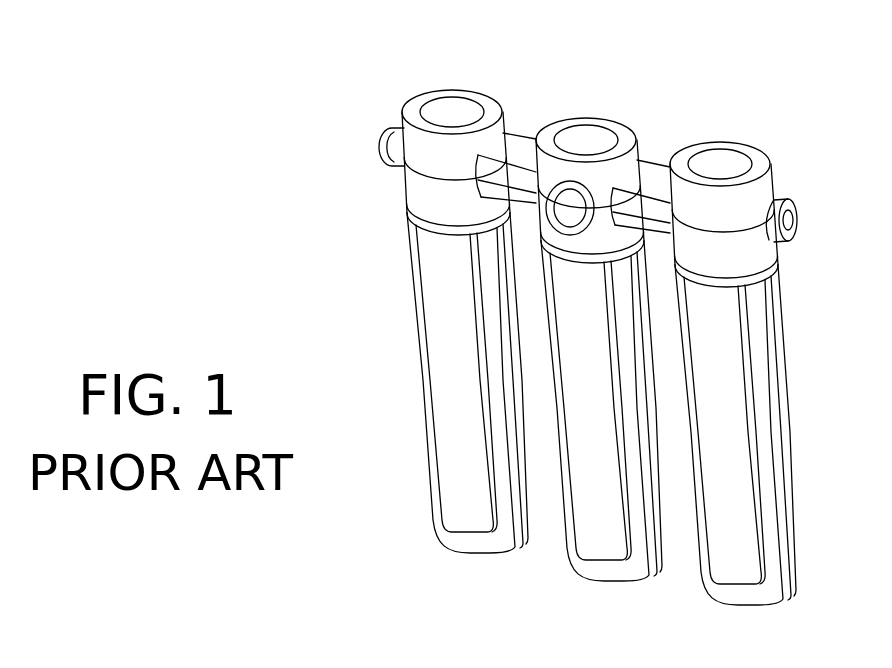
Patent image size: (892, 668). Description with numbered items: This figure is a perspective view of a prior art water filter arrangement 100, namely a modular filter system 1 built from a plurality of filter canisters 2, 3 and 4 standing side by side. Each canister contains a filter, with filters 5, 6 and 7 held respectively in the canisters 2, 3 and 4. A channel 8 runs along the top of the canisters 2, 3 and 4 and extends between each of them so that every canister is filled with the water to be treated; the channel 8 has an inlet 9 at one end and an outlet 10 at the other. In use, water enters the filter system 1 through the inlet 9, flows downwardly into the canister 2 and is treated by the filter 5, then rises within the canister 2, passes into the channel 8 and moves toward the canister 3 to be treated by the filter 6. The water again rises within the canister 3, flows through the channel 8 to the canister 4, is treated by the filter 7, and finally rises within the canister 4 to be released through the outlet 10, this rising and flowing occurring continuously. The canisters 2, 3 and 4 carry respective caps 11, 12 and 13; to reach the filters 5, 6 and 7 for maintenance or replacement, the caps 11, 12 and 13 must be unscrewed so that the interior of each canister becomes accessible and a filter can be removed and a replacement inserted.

The prior art water filtration system 100 is at (381, 67).
The modular filter system 1 is at (831, 125).
The filter canister 2 is at (418, 337).
The filter canister 3 is at (577, 572).
The filter canister 4 is at (791, 480).
The filter 5 is at (442, 402).
The filter 6 is at (580, 522).
The filter 7 is at (718, 513).
The channel 8 is at (523, 130).
The inlet 9 is at (385, 130).
The outlet 10 is at (790, 198).
The cap 11 is at (487, 97).
The cap 12 is at (607, 119).
The cap 13 is at (742, 141).